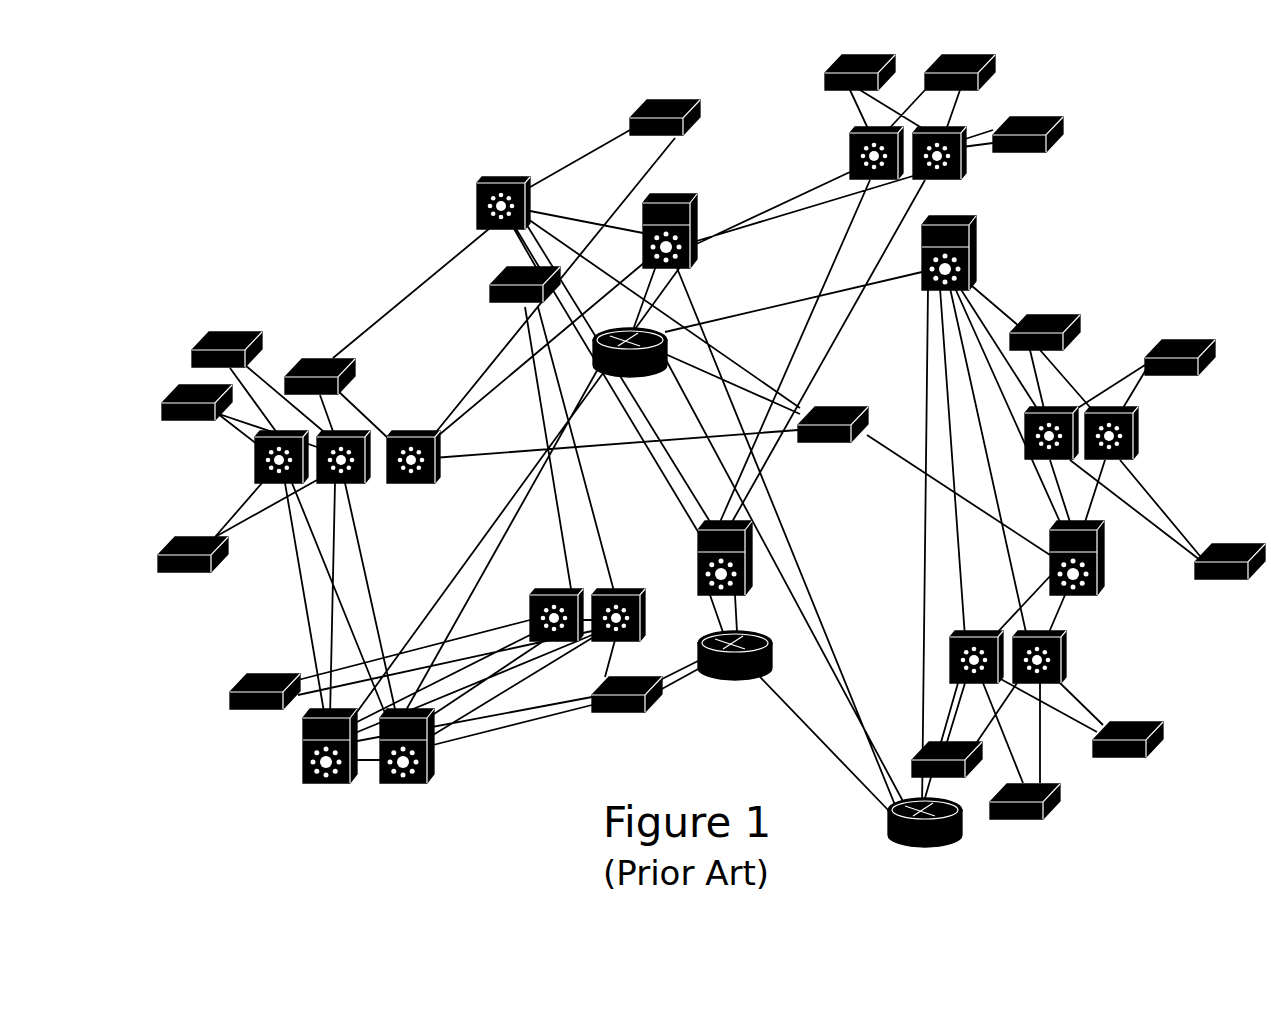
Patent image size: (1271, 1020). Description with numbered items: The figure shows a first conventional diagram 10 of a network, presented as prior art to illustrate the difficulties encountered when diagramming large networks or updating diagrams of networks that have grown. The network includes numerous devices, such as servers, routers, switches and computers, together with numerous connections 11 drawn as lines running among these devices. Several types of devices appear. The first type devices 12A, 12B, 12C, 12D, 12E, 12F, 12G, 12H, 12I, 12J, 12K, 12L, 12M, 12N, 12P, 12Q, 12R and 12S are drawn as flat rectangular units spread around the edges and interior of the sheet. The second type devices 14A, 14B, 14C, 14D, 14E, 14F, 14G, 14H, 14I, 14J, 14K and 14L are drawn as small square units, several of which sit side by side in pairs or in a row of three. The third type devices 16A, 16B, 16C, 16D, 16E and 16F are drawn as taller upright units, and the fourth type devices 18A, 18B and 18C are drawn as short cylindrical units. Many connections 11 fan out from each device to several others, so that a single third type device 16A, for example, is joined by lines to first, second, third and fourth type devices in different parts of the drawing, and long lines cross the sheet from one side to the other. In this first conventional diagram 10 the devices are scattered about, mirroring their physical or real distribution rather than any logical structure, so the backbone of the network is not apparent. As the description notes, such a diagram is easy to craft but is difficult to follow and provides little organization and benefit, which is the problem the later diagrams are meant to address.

The first conventional diagram 10 is at (1187, 87).
The connections 11 is at (558, 161).
The first type device 12A is at (1030, 117).
The first type device 12B is at (978, 78).
The first type device 12C is at (825, 78).
The first type device 12D is at (1050, 318).
The first type device 12E is at (1183, 345).
The first type device 12F is at (1212, 580).
The first type device 12G is at (1160, 745).
The first type device 12H is at (1056, 808).
The first type device 12I is at (914, 748).
The first type device 12J is at (614, 714).
The first type device 12K is at (810, 442).
The first type device 12L is at (688, 107).
The first type device 12M is at (490, 299).
The first type device 12N is at (243, 679).
The first type device 12P is at (170, 540).
The first type device 12Q is at (176, 386).
The first type device 12R is at (219, 332).
The first type device 12S is at (320, 359).
The second type device 14A is at (962, 164).
The second type device 14B is at (850, 150).
The second type device 14C is at (1133, 431).
The second type device 14D is at (1025, 442).
The second type device 14E is at (1062, 652).
The second type device 14F is at (950, 659).
The second type device 14G is at (616, 594).
The second type device 14H is at (532, 614).
The second type device 14I is at (412, 484).
The second type device 14J is at (347, 436).
The second type device 14K is at (255, 458).
The second type device 14L is at (477, 208).
The third type device 16A is at (965, 250).
The third type device 16B is at (1097, 578).
The third type device 16C is at (745, 590).
The third type device 16D is at (400, 785).
The third type device 16E is at (303, 748).
The third type device 16F is at (690, 212).
The fourth type device 18A is at (889, 822).
The fourth type device 18B is at (738, 680).
The fourth type device 18C is at (645, 334).